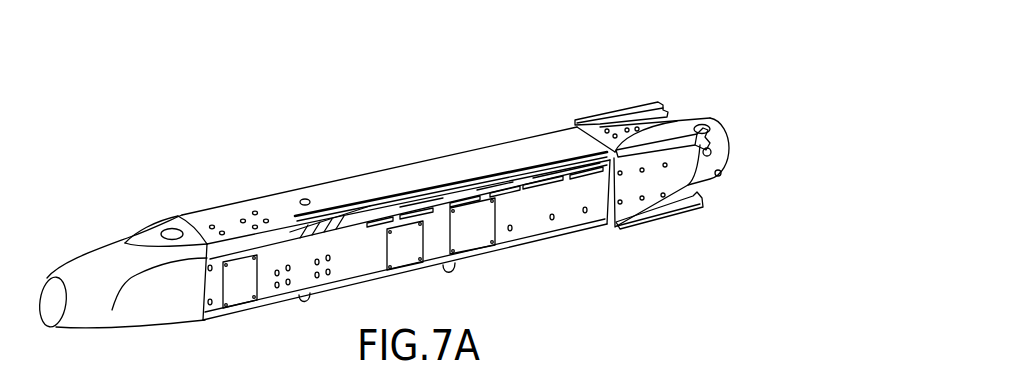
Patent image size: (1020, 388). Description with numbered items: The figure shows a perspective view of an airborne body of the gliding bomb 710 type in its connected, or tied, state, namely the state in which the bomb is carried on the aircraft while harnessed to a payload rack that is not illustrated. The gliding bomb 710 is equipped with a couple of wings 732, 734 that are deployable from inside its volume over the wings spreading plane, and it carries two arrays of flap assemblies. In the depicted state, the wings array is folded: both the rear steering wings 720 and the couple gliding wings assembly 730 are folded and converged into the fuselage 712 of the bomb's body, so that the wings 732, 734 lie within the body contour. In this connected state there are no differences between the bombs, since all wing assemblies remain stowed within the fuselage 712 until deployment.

The gliding bomb 710 is at (370, 125).
The fuselage 712 is at (264, 262).
The rear steering wings 720 is at (642, 104).
The gliding wings assembly 730 is at (558, 160).
The wing 732 is at (521, 194).
The wing 734 is at (458, 150).